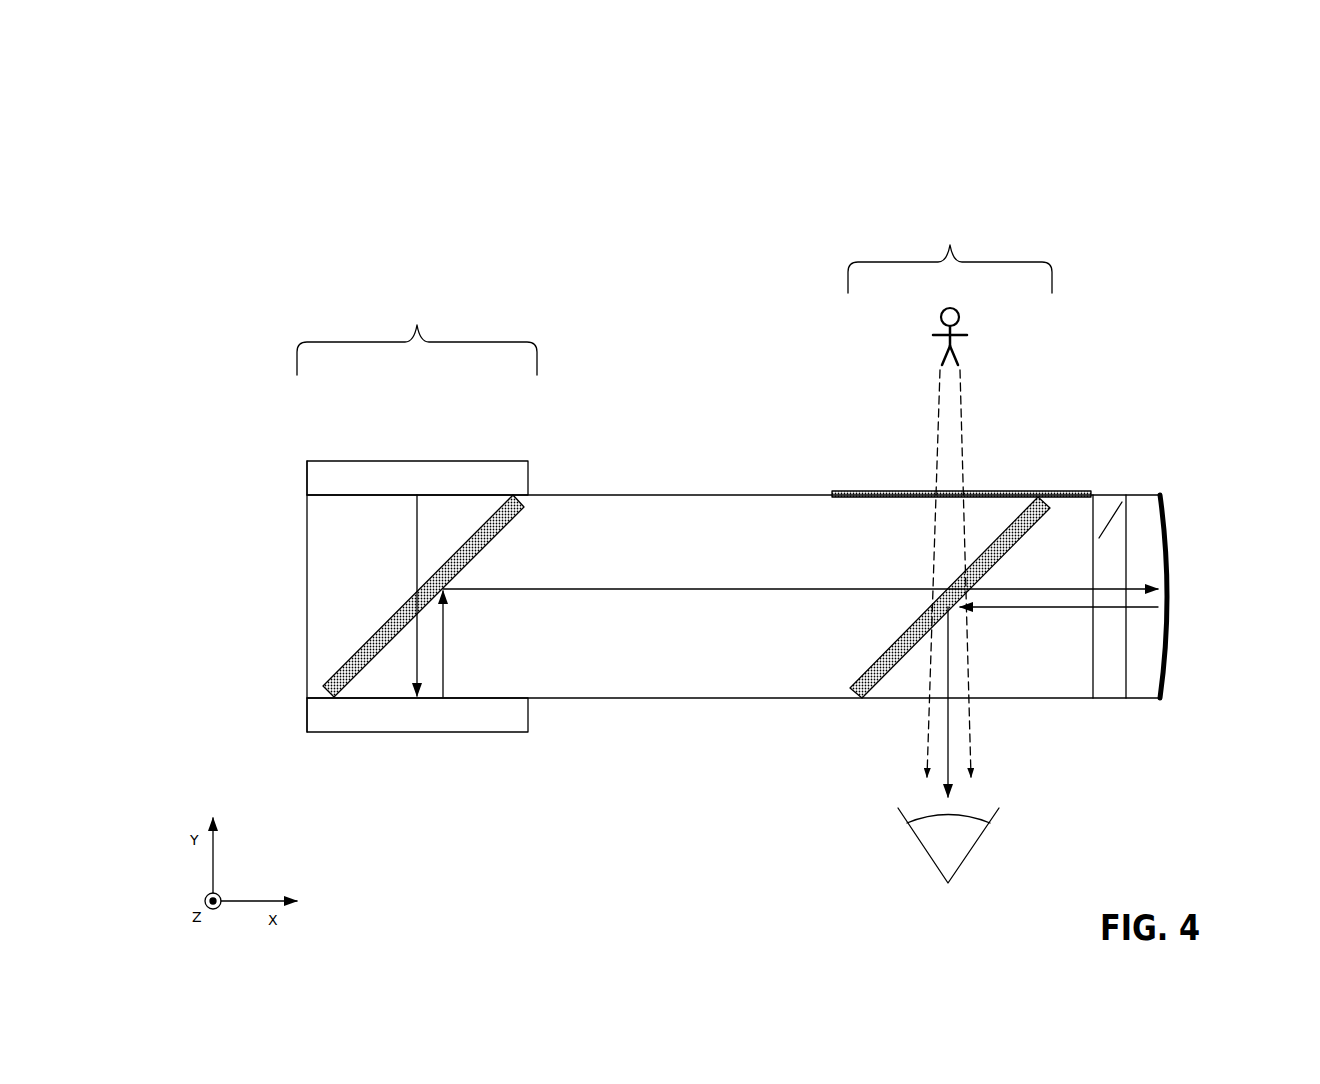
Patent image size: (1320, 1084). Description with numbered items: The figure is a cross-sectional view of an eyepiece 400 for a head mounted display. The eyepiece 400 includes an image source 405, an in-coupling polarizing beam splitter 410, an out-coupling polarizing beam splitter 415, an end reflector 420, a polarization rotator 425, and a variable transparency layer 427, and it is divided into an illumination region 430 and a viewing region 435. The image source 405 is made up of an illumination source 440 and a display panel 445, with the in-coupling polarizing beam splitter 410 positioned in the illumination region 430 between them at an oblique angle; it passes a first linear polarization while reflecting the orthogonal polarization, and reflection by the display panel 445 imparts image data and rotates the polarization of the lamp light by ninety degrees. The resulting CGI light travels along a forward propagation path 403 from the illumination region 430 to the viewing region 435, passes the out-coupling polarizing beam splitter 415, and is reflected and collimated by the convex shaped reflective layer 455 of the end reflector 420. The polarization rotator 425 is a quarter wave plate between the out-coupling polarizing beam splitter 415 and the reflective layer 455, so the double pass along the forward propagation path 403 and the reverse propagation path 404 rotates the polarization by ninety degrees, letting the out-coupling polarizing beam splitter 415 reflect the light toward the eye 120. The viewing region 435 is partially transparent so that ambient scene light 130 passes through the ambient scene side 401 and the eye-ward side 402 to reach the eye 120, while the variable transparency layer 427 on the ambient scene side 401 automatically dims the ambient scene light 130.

The eyepiece 400 is at (318, 167).
The ambient scene side 401 is at (735, 396).
The eye-ward side 402 is at (720, 794).
The forward propagation path 403 is at (663, 589).
The reverse propagation path 404 is at (1077, 610).
The image source 405 is at (287, 440).
The in-coupling polarizing beam splitter 410 is at (513, 523).
The out-coupling polarizing beam splitter 415 is at (862, 670).
The end reflector 420 is at (1170, 452).
The polarization rotator 425 is at (1108, 700).
The variable transparency layer 427 is at (870, 490).
The illumination region 430 is at (417, 339).
The viewing region 435 is at (950, 256).
The illumination source 440 is at (403, 488).
The display panel 445 is at (403, 725).
The convex shaped reflective layer 455 is at (1170, 570).
The eye 120 is at (934, 845).
The ambient scene light 130 is at (968, 410).